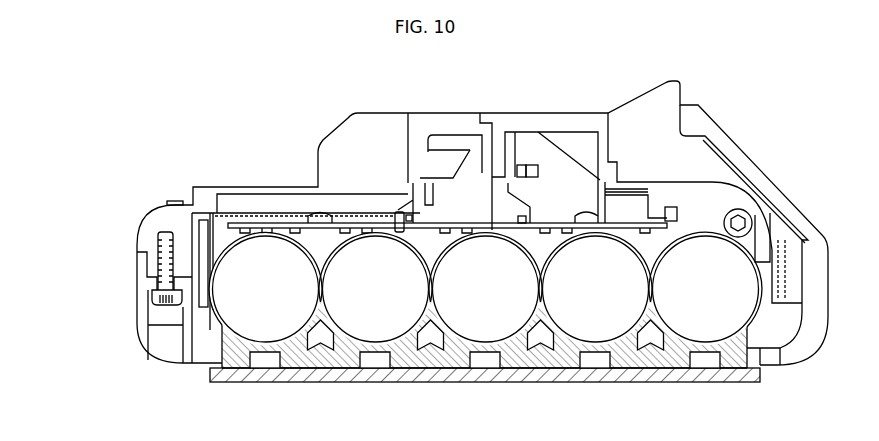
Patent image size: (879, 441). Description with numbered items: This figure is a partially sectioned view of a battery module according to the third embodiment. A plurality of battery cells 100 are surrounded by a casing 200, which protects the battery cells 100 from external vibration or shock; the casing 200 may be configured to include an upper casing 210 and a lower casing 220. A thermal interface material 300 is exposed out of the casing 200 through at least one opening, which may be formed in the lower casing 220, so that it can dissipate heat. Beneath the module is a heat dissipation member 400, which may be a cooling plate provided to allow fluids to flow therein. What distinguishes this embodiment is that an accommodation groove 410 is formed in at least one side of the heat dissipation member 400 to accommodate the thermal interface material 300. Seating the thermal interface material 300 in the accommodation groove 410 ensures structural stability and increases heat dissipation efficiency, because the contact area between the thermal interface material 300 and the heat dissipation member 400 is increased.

The battery cell 100 is at (268, 255).
The casing 200 is at (115, 288).
The upper casing 210 is at (147, 237).
The lower casing 220 is at (145, 302).
The thermal interface material 300 is at (462, 328).
The heat dissipation member 400 is at (316, 376).
The accommodation groove 410 is at (240, 365).